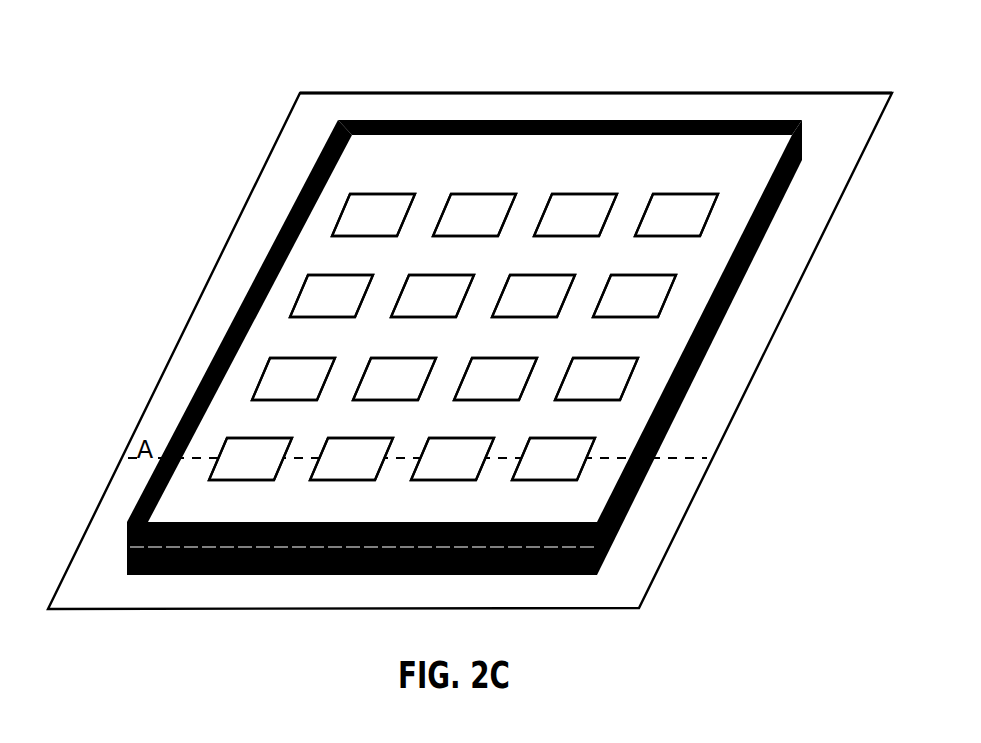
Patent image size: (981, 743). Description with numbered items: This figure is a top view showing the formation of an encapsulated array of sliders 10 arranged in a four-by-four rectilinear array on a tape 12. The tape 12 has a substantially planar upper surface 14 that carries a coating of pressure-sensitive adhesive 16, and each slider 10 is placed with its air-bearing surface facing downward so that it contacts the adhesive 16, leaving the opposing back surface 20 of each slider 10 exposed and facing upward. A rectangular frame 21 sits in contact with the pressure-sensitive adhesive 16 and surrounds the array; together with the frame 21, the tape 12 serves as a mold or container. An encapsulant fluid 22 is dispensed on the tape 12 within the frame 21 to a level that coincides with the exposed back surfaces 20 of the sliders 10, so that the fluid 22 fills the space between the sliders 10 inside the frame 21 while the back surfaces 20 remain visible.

The slider 10 is at (463, 317).
The tape 12 is at (750, 383).
The upper surface 14 is at (777, 100).
The pressure-sensitive adhesive 16 is at (777, 100).
The back surface 20 is at (463, 337).
The rectangular frame 21 is at (542, 120).
The encapsulant fluid 22 is at (750, 192).